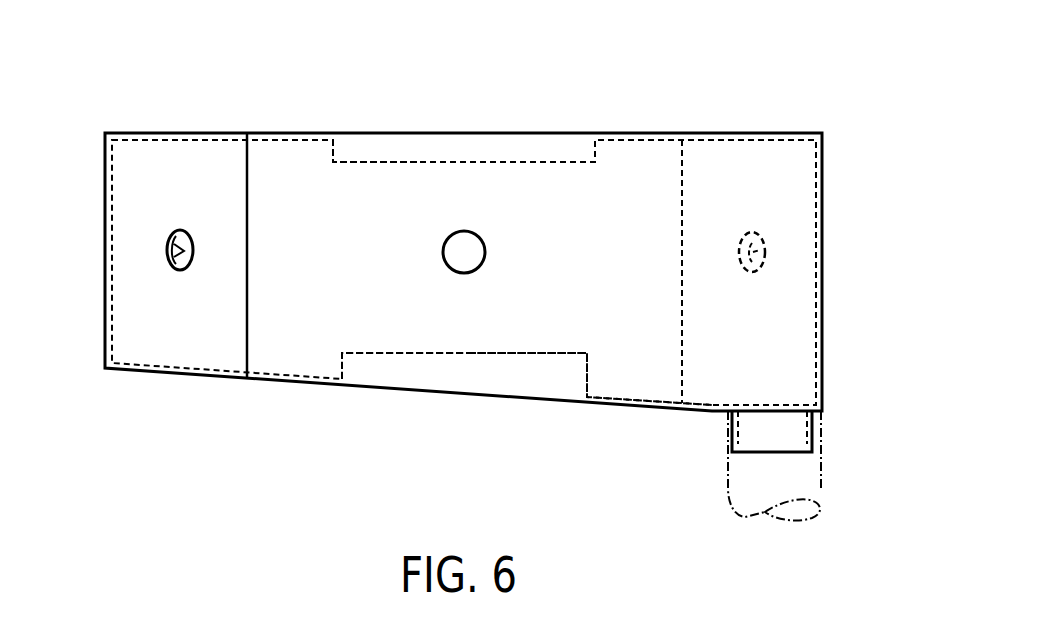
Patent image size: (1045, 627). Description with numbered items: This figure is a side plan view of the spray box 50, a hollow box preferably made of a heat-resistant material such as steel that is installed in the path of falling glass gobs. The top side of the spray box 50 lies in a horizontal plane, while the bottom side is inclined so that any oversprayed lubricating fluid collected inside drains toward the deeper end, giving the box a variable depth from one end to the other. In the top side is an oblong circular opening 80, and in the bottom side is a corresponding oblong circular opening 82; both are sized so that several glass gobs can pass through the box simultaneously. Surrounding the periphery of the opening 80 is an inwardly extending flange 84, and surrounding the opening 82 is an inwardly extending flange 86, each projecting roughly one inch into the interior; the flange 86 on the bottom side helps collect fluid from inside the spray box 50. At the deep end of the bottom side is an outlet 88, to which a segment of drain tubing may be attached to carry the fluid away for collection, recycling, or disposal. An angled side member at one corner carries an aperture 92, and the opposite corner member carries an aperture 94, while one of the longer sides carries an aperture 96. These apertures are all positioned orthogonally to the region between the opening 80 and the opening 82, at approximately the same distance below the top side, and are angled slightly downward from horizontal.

The spray box 50 is at (186, 380).
The opening in top side 80 is at (340, 150).
The opening in bottom side 82 is at (585, 374).
The inwardly extending flange 84 is at (522, 168).
The inwardly extending flange 86 is at (412, 355).
The outlet 88 is at (814, 428).
The aperture 92 is at (168, 258).
The aperture 94 is at (760, 252).
The aperture 96 is at (452, 238).